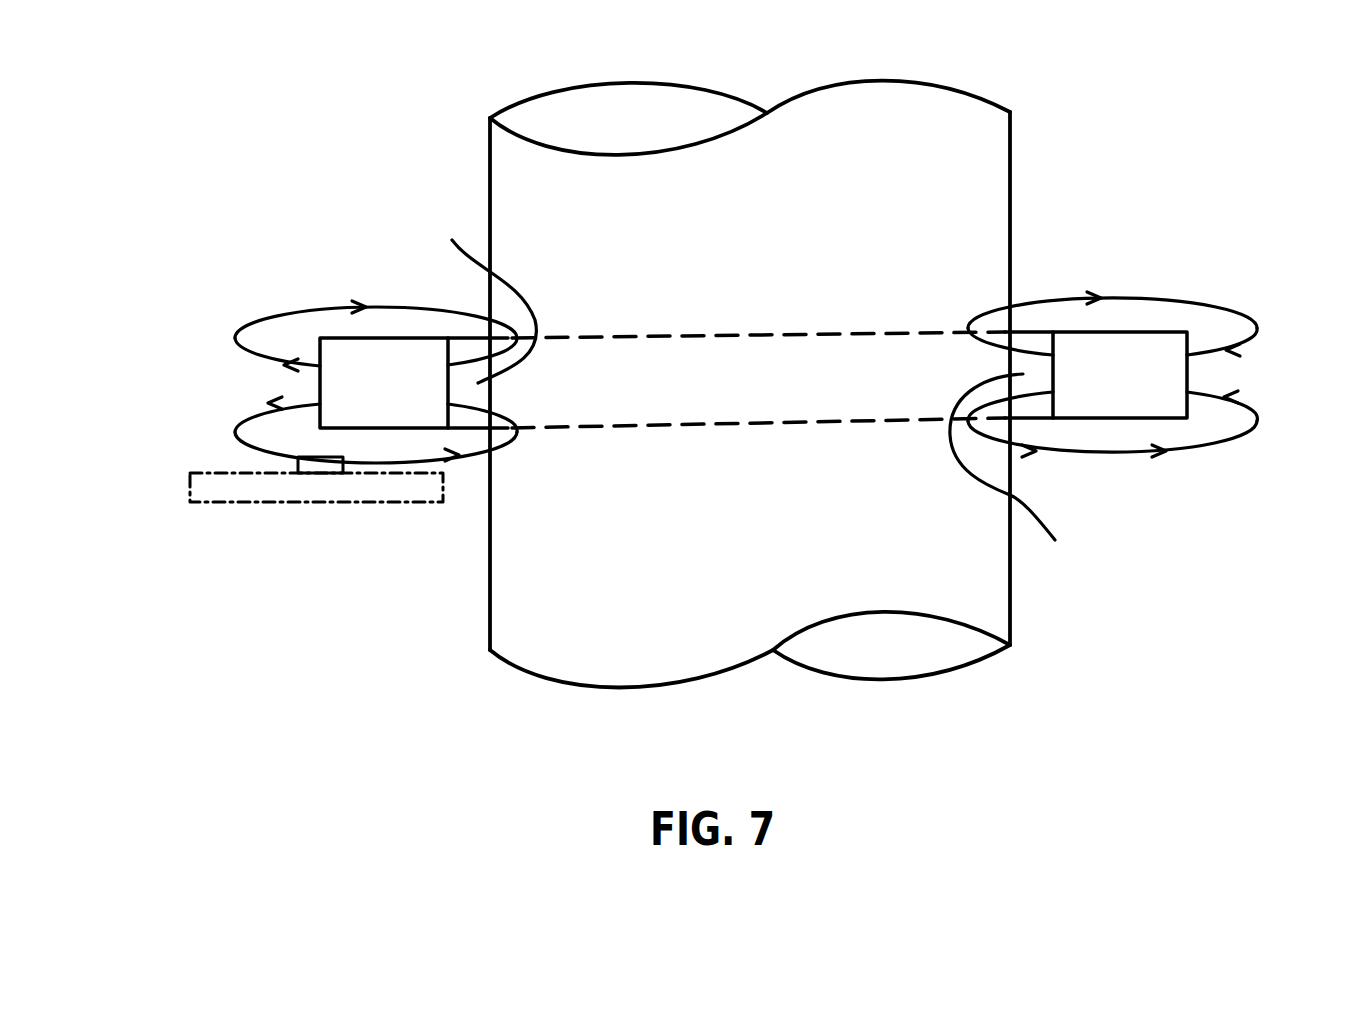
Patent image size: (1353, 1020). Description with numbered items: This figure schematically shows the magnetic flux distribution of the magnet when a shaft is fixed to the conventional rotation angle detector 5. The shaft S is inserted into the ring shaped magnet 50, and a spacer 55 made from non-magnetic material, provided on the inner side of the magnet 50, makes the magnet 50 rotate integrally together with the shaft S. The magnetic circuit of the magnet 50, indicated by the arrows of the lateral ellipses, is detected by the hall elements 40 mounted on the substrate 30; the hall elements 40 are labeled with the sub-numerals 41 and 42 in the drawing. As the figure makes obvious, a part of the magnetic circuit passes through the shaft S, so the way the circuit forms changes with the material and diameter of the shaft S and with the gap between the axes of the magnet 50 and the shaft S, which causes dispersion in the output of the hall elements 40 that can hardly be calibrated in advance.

The shaft S is at (1010, 127).
The rotation angle detector 5 is at (1120, 237).
The substrate 30 is at (260, 486).
The hall elements 40 is at (246, 557).
The magnetic sensor element 41 is at (320, 465).
The magnetic sensor element 42 is at (317, 475).
The magnet 50 is at (367, 338).
The spacer 55 is at (746, 393).